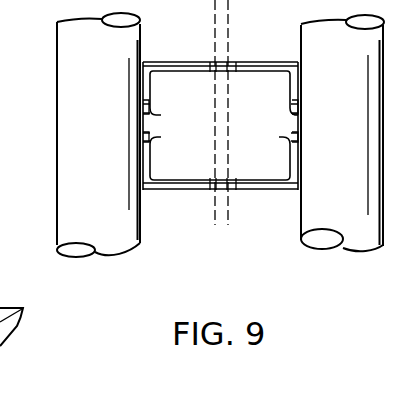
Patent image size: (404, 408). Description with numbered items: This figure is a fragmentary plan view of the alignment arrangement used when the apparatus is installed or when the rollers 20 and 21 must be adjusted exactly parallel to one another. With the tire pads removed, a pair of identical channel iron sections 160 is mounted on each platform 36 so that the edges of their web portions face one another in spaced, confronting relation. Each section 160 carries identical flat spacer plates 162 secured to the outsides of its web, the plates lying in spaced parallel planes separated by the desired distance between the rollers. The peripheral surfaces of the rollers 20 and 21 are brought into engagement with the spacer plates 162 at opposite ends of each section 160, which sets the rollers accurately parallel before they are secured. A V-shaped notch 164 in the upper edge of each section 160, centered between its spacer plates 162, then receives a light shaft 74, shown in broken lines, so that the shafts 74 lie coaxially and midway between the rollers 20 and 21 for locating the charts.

The roller 20 is at (107, 212).
The roller 21 is at (345, 214).
The platform 36 is at (190, 138).
The light shaft 74 is at (229, 114).
The section 160 is at (259, 61).
The spacer plate 162 is at (140, 73).
The V-shaped notch 164 is at (218, 61).